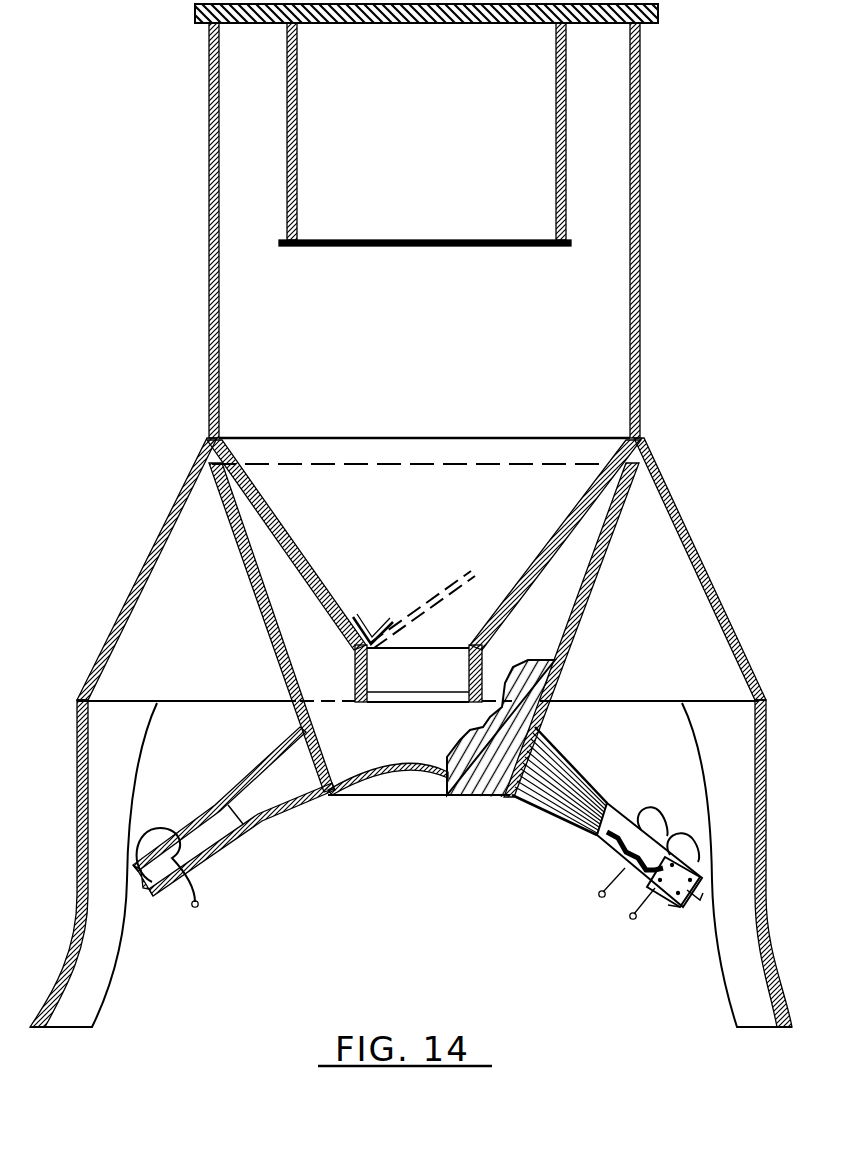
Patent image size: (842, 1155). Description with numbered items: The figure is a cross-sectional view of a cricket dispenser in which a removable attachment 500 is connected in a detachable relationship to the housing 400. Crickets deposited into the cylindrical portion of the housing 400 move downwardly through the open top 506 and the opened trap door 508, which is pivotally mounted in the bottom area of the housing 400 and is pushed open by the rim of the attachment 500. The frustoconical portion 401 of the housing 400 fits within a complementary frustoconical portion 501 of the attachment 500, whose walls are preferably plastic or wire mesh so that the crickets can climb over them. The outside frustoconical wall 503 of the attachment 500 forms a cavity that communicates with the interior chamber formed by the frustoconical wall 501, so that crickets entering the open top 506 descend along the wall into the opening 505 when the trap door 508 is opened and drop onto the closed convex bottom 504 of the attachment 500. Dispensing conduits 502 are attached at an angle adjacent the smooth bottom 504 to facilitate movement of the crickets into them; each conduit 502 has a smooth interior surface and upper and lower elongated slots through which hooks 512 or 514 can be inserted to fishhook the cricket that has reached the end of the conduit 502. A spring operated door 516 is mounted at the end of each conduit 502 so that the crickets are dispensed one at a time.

The housing 400 is at (641, 322).
The frustoconical portion 401 is at (535, 558).
The attachment 500 is at (568, 637).
The frustoconical portion 501 is at (541, 578).
The dispensing conduit 502 is at (268, 752).
The outside frustoconical wall 503 is at (268, 632).
The convex bottom 504 is at (420, 781).
The opening 505 is at (442, 678).
The open top 506 is at (475, 467).
The trap door 508 is at (410, 613).
The hook 512 is at (608, 882).
The hook 514 is at (640, 903).
The spring operated door 516 is at (670, 903).